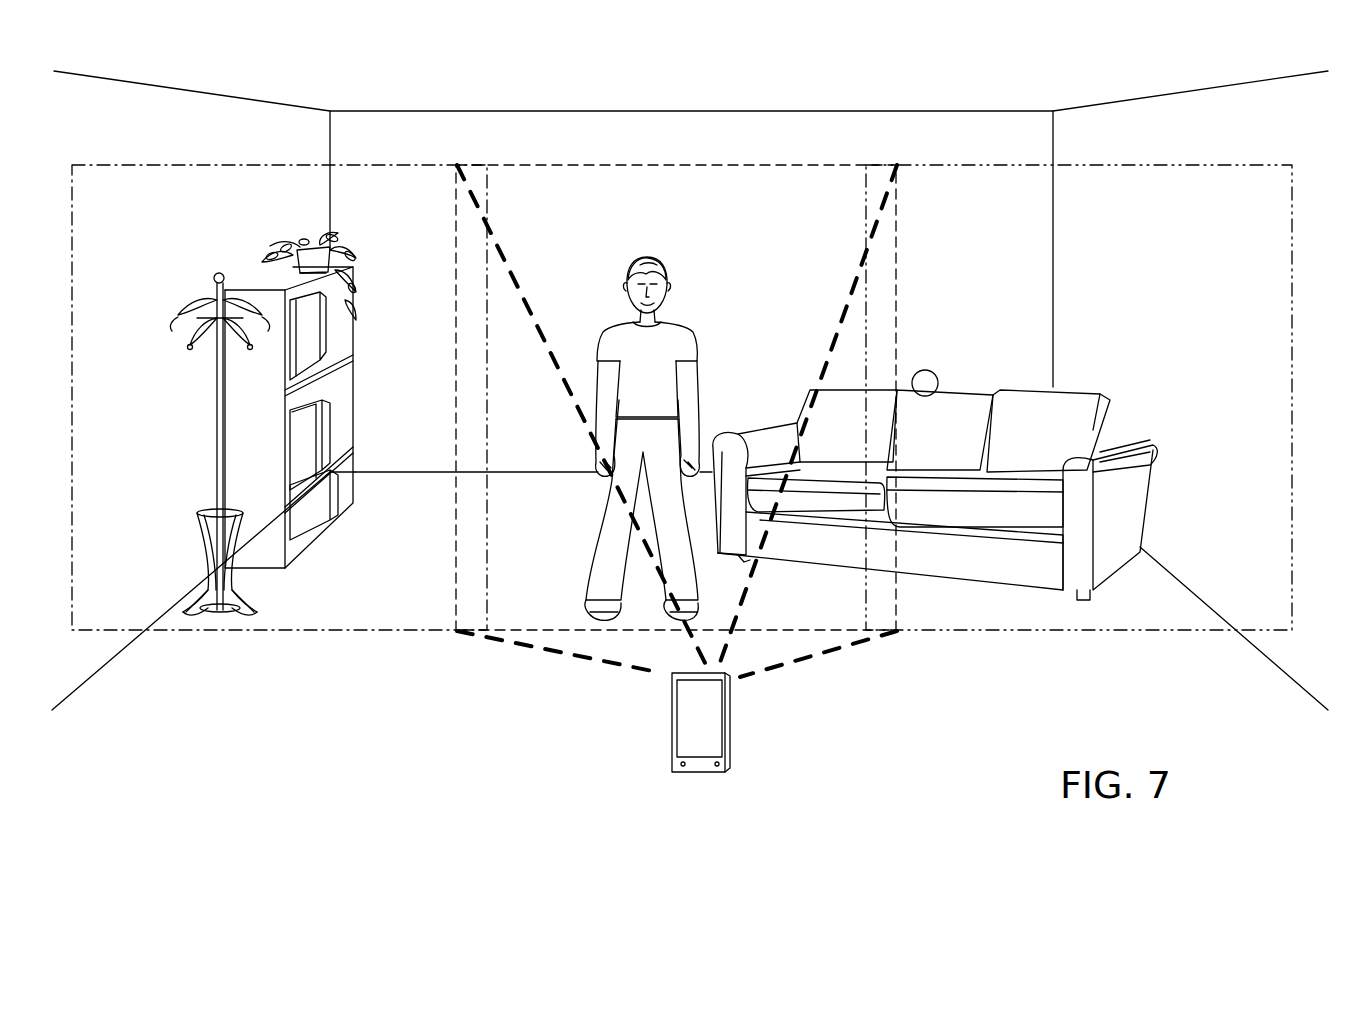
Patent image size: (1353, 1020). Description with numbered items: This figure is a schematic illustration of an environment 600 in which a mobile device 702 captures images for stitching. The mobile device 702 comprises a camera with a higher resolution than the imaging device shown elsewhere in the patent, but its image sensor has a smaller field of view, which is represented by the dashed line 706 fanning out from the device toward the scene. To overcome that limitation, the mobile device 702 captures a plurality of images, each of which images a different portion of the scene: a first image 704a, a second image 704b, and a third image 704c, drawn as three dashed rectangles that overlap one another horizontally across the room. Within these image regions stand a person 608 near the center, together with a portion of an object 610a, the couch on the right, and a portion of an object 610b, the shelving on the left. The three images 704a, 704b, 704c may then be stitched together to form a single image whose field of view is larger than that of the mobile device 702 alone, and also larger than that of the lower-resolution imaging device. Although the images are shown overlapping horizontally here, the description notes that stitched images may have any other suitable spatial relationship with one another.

The environment 600 is at (828, 88).
The person 608 is at (696, 296).
The object 610a is at (951, 336).
The object 610b is at (241, 234).
The mobile device 702 is at (731, 680).
The first image 704a is at (347, 165).
The second image 704b is at (611, 165).
The third image 704c is at (963, 165).
The dashed line 706 is at (847, 648).